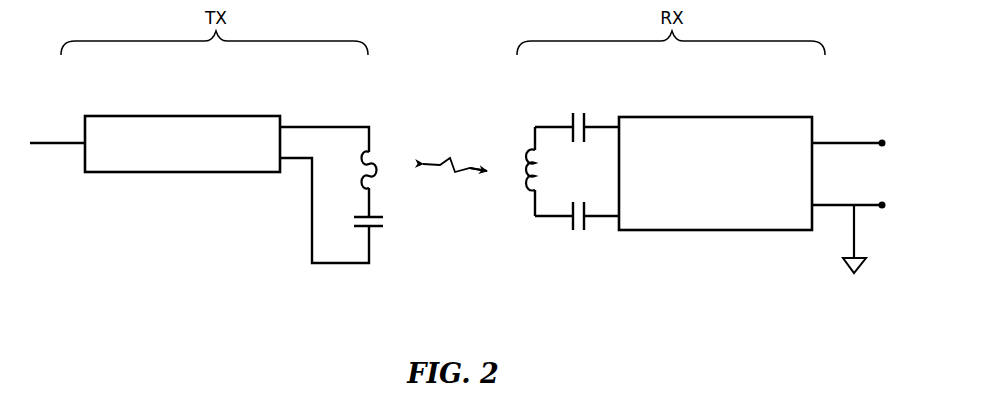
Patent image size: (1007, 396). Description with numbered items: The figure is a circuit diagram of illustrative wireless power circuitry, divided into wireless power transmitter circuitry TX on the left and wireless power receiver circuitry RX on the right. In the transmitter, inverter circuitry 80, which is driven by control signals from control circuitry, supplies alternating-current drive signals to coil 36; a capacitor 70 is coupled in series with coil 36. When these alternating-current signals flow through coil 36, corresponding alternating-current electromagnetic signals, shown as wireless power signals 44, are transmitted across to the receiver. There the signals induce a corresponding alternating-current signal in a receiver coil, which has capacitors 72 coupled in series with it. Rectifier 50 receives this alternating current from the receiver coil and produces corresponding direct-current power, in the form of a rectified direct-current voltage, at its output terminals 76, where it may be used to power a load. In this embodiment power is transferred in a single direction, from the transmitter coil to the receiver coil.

The coil 36 is at (386, 160).
The wireless power signals 44 is at (453, 160).
The rectifier 50 is at (722, 117).
The capacitor 70 is at (392, 232).
The capacitors 72 is at (578, 102).
The output terminals 76 is at (884, 146).
The inverter circuitry 80 is at (160, 172).